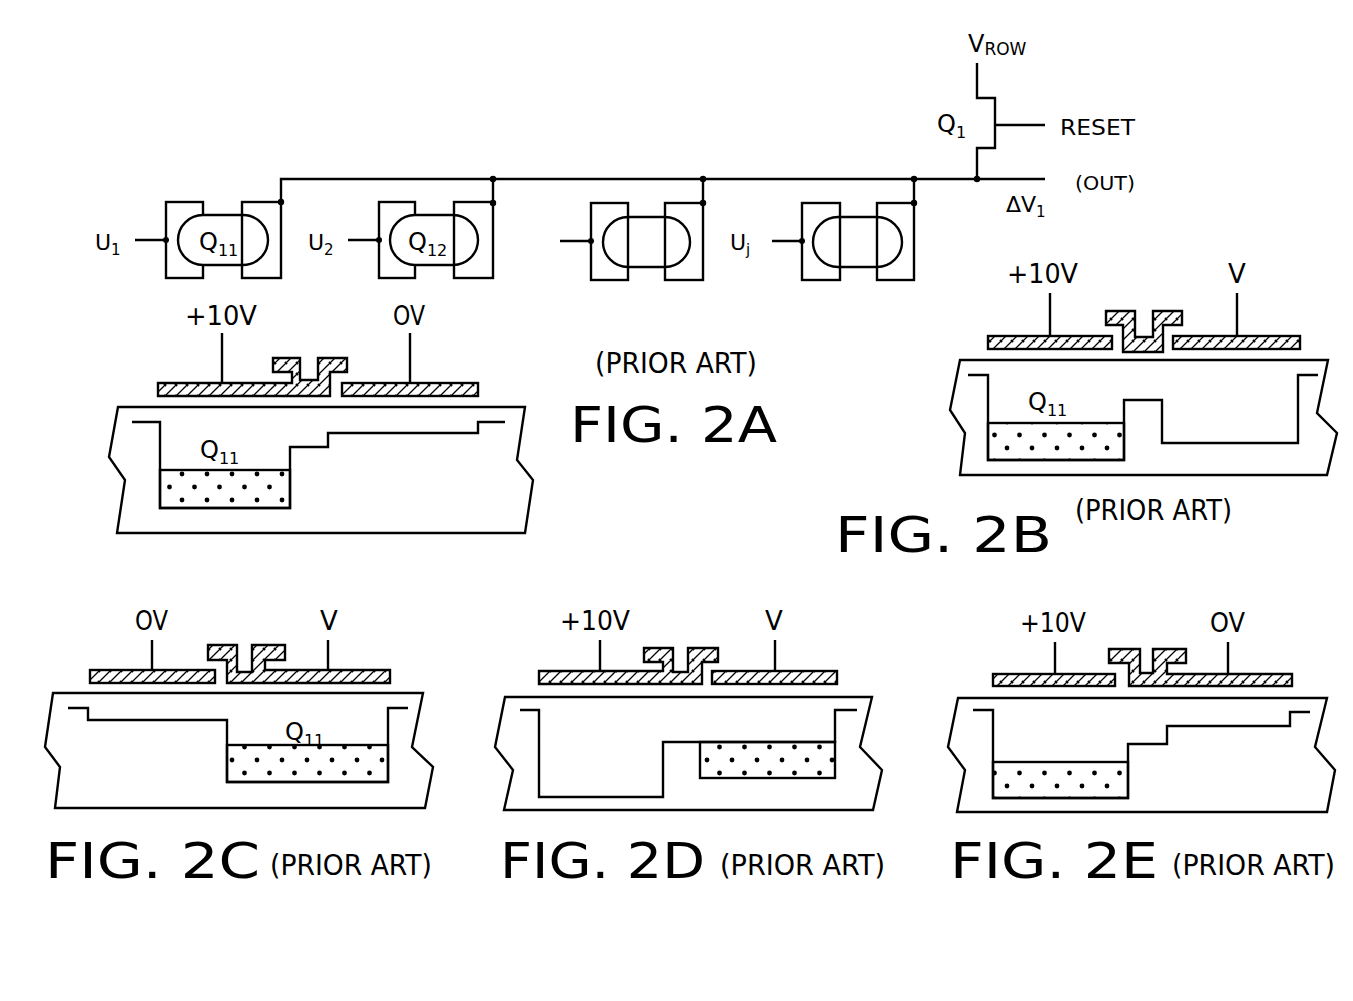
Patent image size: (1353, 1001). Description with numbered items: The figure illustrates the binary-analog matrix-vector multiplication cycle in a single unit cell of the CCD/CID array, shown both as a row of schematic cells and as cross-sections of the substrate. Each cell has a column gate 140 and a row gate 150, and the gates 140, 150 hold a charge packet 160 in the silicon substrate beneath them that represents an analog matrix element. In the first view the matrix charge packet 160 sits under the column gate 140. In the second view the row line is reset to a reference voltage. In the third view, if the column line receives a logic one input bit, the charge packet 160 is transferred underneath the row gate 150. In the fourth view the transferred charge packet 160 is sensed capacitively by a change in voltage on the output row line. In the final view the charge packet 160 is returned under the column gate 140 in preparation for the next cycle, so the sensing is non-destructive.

The column gate 140 is at (165, 274).
The row gate 150 is at (455, 203).
The charge packet 160 is at (217, 213).